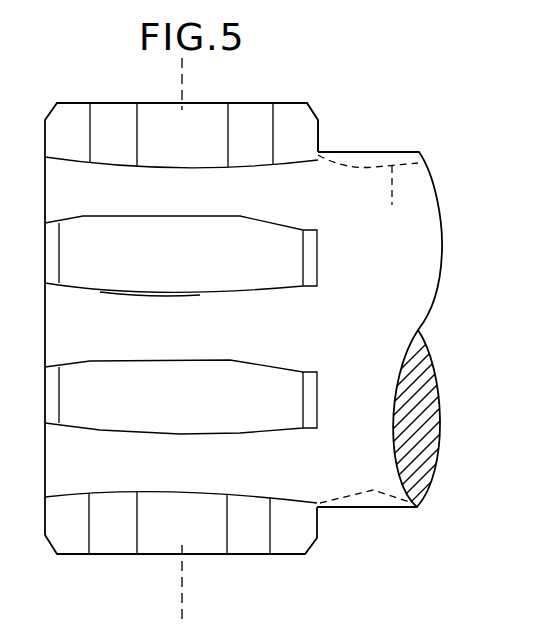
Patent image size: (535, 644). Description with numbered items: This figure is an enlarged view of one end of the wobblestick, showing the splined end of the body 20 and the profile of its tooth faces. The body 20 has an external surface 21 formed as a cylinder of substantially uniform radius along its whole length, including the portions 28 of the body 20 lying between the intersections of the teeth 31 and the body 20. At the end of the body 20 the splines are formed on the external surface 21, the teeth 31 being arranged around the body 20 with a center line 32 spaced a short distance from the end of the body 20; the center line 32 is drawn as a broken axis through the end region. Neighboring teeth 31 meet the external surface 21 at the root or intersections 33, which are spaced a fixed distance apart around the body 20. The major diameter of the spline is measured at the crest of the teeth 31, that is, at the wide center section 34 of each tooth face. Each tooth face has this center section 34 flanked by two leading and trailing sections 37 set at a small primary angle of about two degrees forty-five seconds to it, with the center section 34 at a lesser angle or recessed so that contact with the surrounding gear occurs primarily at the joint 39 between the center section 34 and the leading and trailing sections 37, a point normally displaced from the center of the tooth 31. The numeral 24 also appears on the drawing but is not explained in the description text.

The flange line 20 is at (378, 160).
The body 21 is at (358, 298).
The bore 24 is at (392, 197).
The head portion 28 is at (203, 199).
The end wall 31 is at (307, 128).
The central axis 32 is at (182, 587).
The ribs 33 is at (177, 357).
The end flange 34 is at (166, 102).
The slot 37 is at (115, 295).
The groove 39 is at (239, 103).